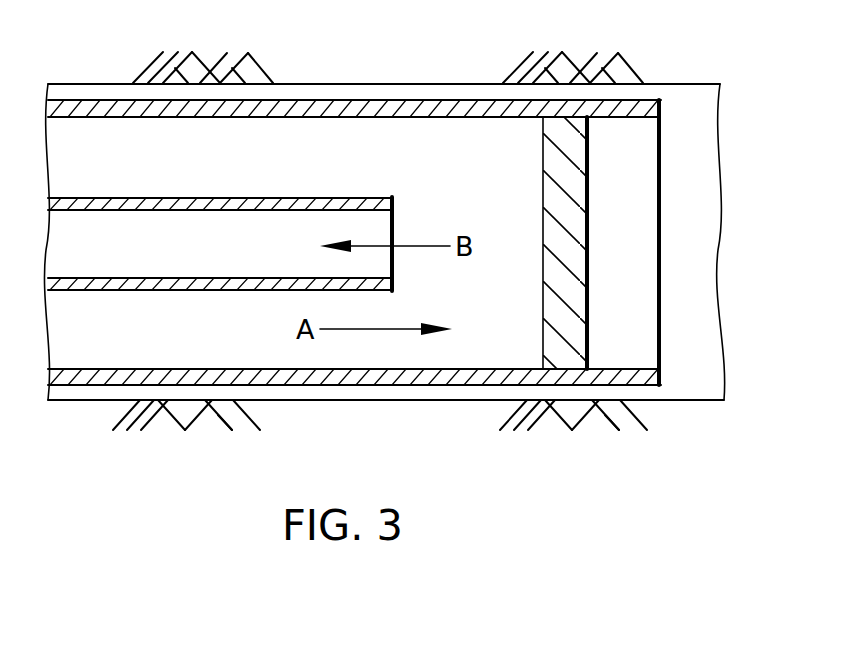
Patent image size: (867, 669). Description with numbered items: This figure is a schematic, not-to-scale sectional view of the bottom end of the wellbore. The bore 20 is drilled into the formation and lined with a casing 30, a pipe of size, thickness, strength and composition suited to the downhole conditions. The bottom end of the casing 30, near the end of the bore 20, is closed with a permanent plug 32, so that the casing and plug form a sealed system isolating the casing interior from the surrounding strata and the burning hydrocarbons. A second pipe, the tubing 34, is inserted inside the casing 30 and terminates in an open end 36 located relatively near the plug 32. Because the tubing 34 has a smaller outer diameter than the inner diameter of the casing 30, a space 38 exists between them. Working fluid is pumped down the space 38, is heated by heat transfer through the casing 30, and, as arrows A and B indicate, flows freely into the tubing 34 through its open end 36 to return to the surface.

The bore 20 is at (325, 84).
The casing 30 is at (478, 108).
The permanent plug 32 is at (548, 285).
The tubing 34 is at (92, 290).
The open end 36 is at (395, 222).
The space 38 is at (87, 145).